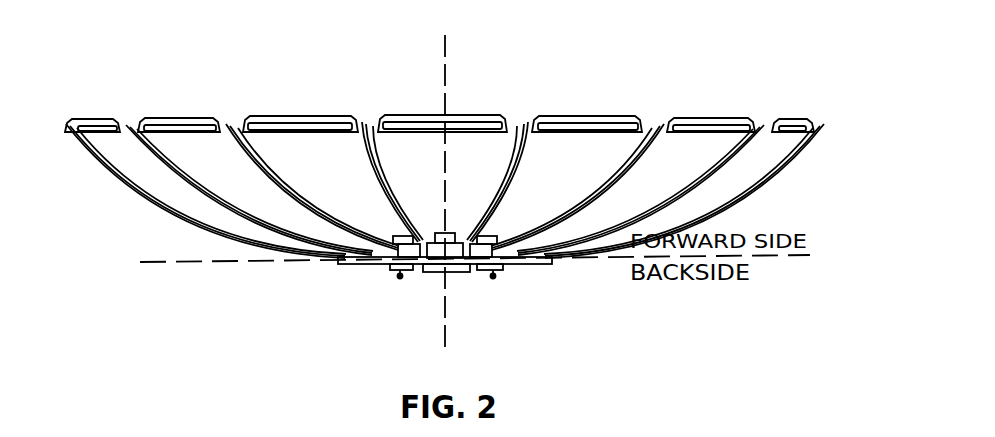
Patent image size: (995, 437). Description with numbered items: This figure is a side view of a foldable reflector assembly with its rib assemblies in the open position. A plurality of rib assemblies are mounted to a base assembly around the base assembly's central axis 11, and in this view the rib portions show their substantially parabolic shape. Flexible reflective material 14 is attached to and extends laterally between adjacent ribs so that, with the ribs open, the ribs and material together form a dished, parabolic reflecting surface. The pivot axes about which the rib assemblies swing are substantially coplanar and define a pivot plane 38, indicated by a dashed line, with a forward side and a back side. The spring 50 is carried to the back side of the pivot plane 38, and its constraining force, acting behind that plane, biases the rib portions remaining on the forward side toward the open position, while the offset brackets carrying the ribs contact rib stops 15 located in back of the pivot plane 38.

The central axis 11 is at (451, 75).
The flexible reflective material 14 is at (681, 147).
The rib stop 15 is at (553, 259).
The pivot plane 38 is at (160, 264).
The spring 50 is at (336, 266).